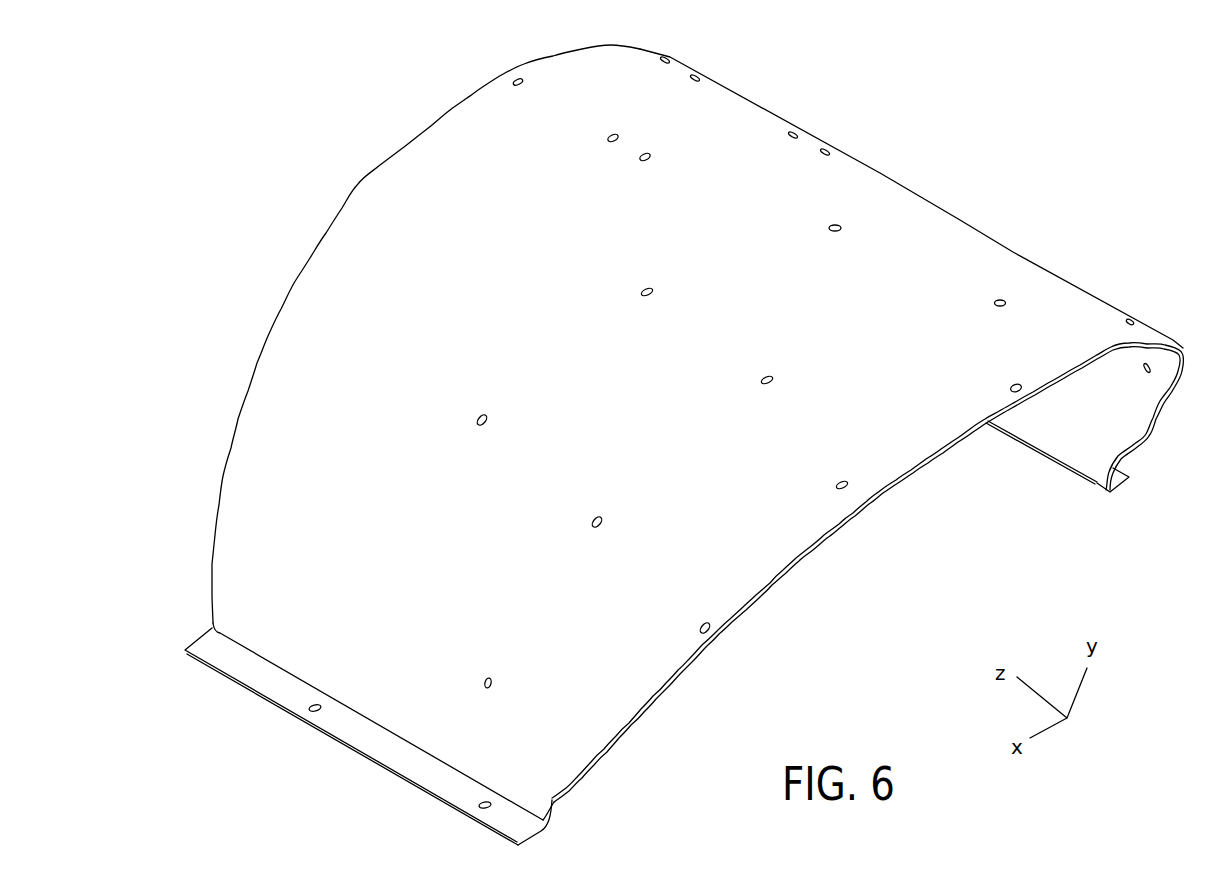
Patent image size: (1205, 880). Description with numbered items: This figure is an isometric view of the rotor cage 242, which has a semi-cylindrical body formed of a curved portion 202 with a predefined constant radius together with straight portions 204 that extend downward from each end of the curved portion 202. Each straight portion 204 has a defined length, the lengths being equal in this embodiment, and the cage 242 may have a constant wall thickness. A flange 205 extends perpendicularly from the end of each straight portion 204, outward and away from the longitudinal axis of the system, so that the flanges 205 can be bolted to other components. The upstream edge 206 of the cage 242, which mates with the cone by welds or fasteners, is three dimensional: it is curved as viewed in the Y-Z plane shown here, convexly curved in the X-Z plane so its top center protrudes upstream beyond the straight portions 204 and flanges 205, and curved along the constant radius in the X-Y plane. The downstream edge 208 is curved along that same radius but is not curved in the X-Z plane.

The cage 242 is at (299, 249).
The downstream edge 208 is at (462, 100).
The curved portion 202 is at (473, 250).
The upstream edge 206 is at (940, 456).
The straight portion 204 is at (1093, 481).
The flange 205 is at (257, 677).